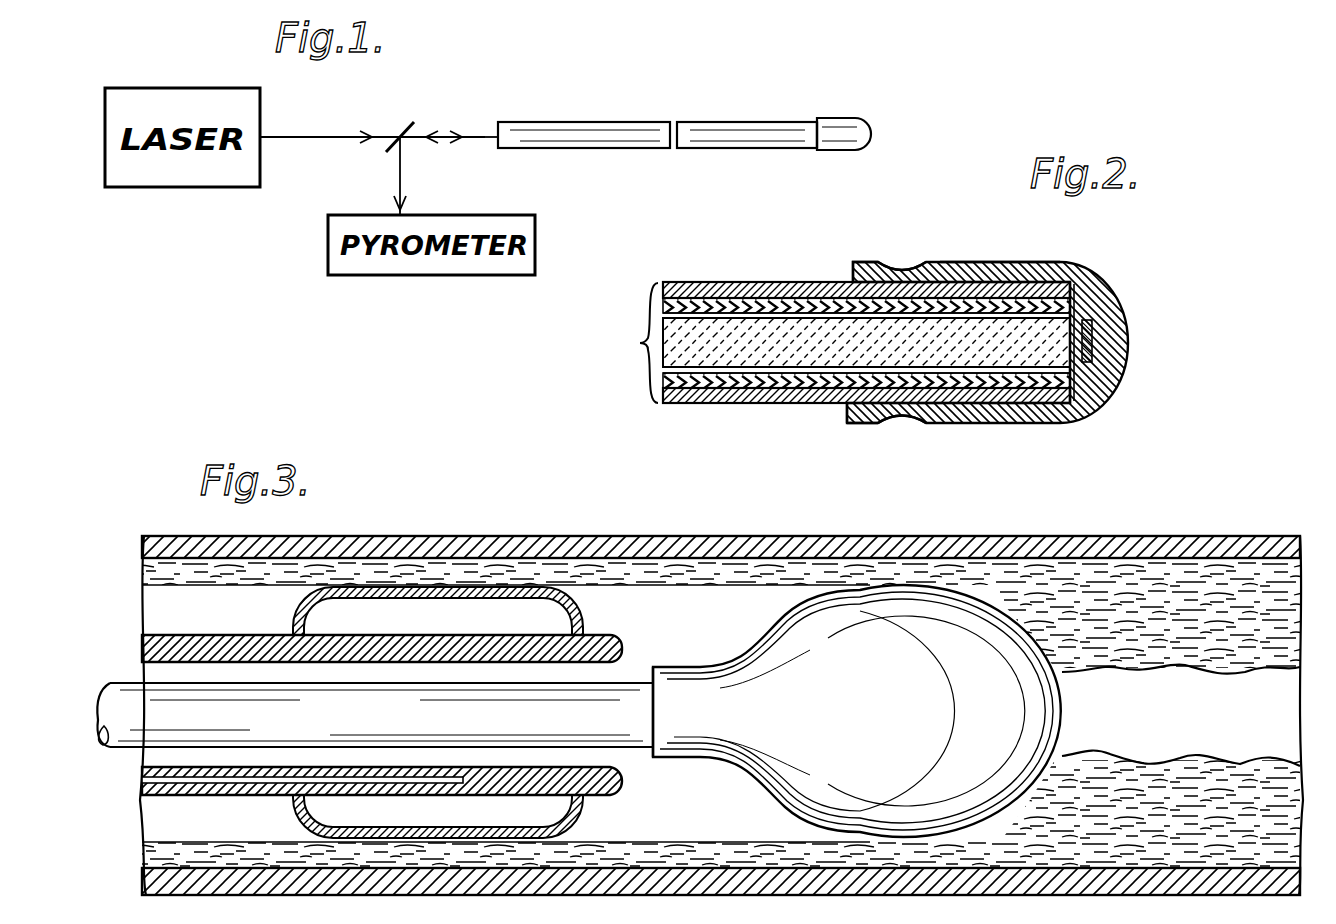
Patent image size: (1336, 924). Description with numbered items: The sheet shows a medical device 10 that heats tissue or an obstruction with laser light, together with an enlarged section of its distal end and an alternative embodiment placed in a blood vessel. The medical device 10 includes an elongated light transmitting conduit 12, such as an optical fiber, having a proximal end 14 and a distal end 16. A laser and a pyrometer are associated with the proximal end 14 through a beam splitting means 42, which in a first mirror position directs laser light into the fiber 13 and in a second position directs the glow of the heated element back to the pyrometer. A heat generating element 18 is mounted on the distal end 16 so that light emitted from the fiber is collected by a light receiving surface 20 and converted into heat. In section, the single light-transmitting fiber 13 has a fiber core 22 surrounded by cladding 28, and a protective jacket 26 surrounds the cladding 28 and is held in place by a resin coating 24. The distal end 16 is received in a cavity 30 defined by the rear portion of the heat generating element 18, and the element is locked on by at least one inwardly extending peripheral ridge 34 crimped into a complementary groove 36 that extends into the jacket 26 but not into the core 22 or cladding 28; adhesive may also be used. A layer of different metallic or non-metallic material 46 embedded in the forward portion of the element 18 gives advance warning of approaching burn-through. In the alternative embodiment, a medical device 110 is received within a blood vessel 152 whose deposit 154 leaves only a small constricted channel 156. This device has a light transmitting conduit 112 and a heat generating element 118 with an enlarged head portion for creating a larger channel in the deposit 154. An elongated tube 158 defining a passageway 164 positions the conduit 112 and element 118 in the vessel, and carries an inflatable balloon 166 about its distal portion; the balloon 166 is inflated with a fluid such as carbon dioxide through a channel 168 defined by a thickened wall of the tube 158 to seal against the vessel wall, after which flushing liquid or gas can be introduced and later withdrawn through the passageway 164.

In FIG. 1, the medical device 10 is at (585, 97).
In FIG. 1, the light transmitting conduit 12 is at (713, 122).
In FIG. 2, the light transmitting conduit 12 is at (800, 282).
In FIG. 2, the light-transmitting fiber 13 is at (638, 343).
In FIG. 1, the proximal end 14 is at (512, 152).
In FIG. 1, the distal end 16 is at (815, 149).
In FIG. 2, the distal end 16 is at (1086, 320).
In FIG. 1, the heat generating element 18 is at (856, 118).
In FIG. 2, the heat generating element 18 is at (1124, 296).
In FIG. 2, the light receiving surface 20 is at (1045, 400).
In FIG. 2, the fiber core 22 is at (700, 335).
In FIG. 2, the resin coating 24 is at (735, 303).
In FIG. 2, the jacket 26 is at (714, 403).
In FIG. 2, the cladding 28 is at (838, 300).
In FIG. 2, the cavity 30 is at (1008, 286).
In FIG. 2, the peripheral ridge 34 is at (905, 405).
In FIG. 2, the groove 36 is at (912, 412).
In FIG. 1, the beam splitting means 42 is at (404, 118).
In FIG. 2, the layer of different metallic or non-metallic material 46 is at (1098, 341).
In FIG. 3, the medical device 110 is at (598, 612).
In FIG. 3, the light transmitting conduit 112 is at (528, 730).
In FIG. 3, the heat generating element 118 is at (955, 735).
In FIG. 3, the blood vessel 152 is at (895, 540).
In FIG. 3, the deposit 154 is at (1210, 614).
In FIG. 3, the constricted channel 156 is at (1141, 713).
In FIG. 3, the elongated tube 158 is at (250, 630).
In FIG. 3, the passageway 164 is at (365, 662).
In FIG. 3, the inflatable balloon 166 is at (520, 586).
In FIG. 3, the channel 168 is at (368, 776).